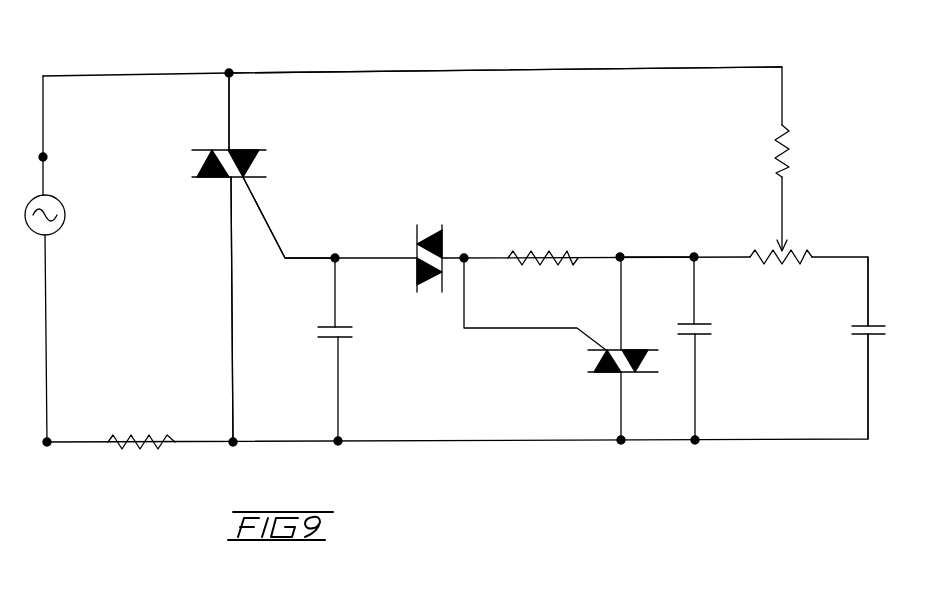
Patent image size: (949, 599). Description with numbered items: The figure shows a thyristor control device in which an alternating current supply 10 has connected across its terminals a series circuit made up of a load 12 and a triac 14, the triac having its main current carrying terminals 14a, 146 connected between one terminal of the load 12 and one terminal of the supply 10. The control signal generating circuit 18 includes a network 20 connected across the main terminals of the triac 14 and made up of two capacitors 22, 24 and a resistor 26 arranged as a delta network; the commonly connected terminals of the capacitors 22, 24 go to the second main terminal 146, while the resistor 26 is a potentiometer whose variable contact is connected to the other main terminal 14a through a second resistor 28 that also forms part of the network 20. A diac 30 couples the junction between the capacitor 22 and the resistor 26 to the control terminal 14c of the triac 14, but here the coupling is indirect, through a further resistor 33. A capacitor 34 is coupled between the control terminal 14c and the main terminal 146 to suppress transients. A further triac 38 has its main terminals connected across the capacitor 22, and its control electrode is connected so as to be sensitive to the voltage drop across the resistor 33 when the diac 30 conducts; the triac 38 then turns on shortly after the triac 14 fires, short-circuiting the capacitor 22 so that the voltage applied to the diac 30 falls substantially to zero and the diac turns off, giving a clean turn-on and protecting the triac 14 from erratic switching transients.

The alternating current supply 10 is at (56, 230).
The load 12 is at (140, 445).
The triac 14 is at (198, 160).
The main current carrying terminal 14a is at (230, 108).
The control terminal 14c is at (277, 238).
The second main current carrying terminal 146 is at (232, 363).
The control signal generating circuit 18 is at (607, 66).
The network 20 is at (643, 282).
The capacitor 22 is at (705, 338).
The capacitor 24 is at (874, 338).
The resistor 26 is at (799, 251).
The second resistor 28 is at (788, 155).
The diac 30 is at (426, 226).
The further resistor 33 is at (560, 250).
The capacitor 34 is at (342, 338).
The further triac 38 is at (598, 358).